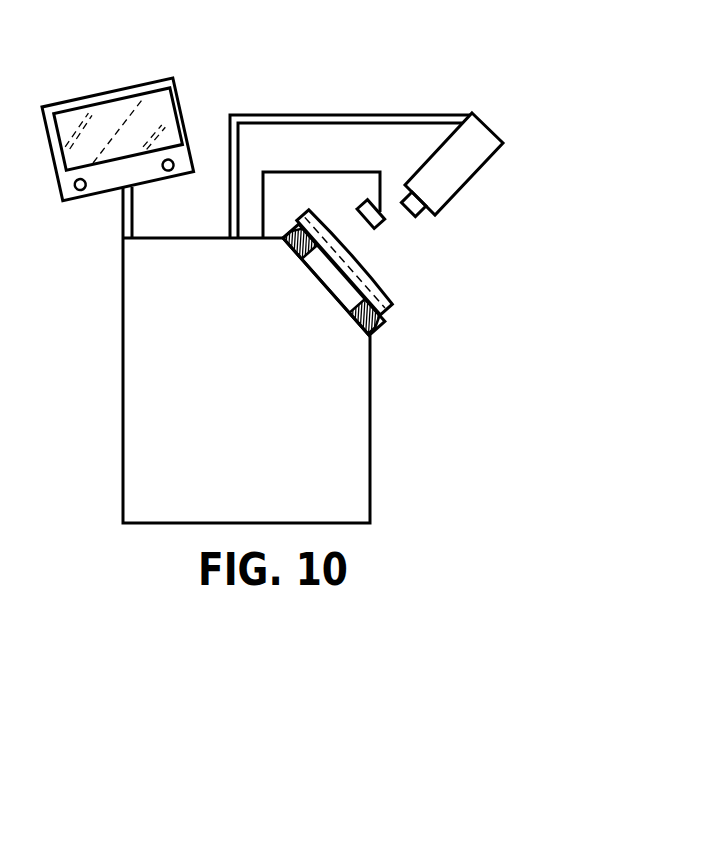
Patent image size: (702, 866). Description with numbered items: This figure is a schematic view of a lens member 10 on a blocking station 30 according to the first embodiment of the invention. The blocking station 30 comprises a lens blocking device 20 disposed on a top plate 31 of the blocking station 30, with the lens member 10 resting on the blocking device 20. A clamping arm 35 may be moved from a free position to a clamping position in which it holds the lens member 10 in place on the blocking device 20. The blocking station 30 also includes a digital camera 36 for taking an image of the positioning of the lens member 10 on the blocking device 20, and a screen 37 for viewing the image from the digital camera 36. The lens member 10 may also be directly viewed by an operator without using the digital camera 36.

The lens member 10 is at (383, 296).
The lens blocking device 20 is at (370, 319).
The blocking station 30 is at (285, 82).
The top plate 31 is at (380, 328).
The clamping arm 35 is at (355, 172).
The digital camera 36 is at (477, 158).
The screen 37 is at (105, 120).